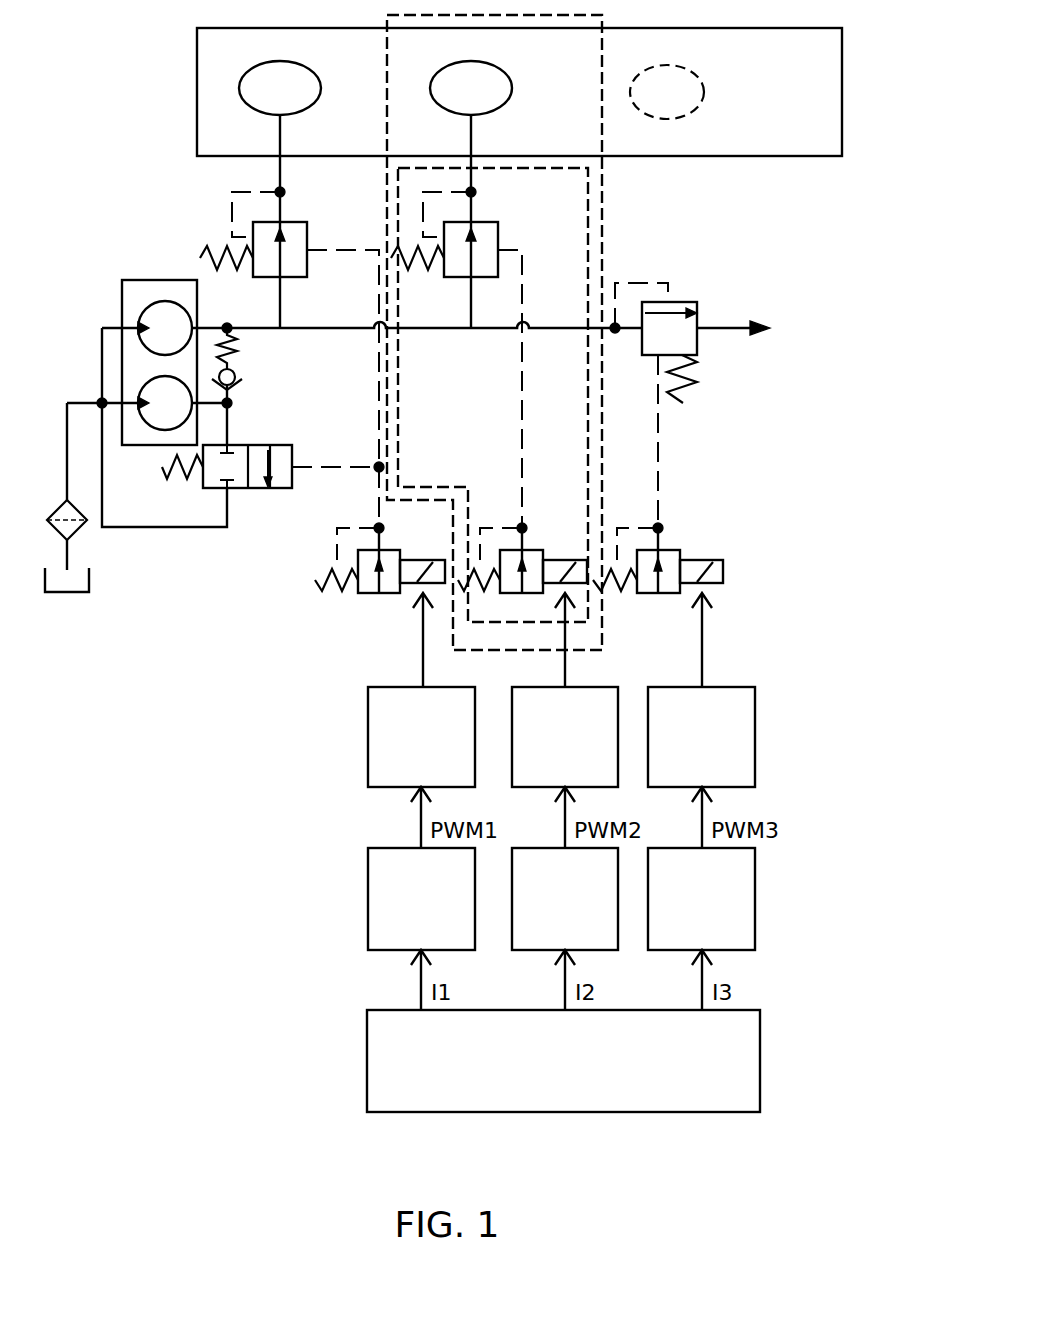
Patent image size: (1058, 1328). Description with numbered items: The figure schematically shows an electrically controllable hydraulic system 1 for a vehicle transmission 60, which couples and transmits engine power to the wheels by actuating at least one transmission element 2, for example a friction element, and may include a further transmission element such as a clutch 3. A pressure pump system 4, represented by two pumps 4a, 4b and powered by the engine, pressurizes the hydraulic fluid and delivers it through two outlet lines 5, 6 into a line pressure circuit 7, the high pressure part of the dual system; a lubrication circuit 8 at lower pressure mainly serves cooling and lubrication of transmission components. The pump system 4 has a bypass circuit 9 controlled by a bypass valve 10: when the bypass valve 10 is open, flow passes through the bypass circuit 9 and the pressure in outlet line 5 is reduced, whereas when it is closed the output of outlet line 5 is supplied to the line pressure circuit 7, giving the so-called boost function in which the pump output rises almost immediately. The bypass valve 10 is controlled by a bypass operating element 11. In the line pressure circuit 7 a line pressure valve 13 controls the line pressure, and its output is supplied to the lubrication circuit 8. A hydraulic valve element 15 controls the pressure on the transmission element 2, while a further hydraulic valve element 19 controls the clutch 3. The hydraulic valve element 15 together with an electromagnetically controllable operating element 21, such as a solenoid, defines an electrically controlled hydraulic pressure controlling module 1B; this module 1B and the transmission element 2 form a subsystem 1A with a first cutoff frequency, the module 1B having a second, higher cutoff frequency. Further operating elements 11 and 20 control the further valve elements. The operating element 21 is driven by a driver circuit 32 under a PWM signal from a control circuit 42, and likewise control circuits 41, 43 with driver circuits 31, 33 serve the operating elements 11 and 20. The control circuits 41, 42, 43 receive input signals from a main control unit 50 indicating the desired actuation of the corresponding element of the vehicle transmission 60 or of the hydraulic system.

The electrically controllable hydraulic system 1 is at (198, 978).
The subsystem 1A is at (601, 210).
The electrically controlled hydraulic pressure controlling module 1B is at (588, 255).
The transmission element 2 is at (463, 102).
The clutch 3 is at (272, 102).
The pressure pump system 4 is at (111, 362).
The pump 4a is at (181, 416).
The pump 4b is at (181, 341).
The outlet line 5 is at (207, 404).
The outlet line 6 is at (212, 327).
The line pressure circuit 7 is at (338, 330).
The lubrication circuit 8 is at (730, 328).
The bypass circuit 9 is at (186, 527).
The bypass valve 10 is at (258, 490).
The bypass operating element 11 is at (371, 593).
The line pressure valve 13 is at (697, 345).
The hydraulic valve element 15 is at (462, 280).
The hydraulic valve element 19 is at (298, 280).
The electromagnetically controllable operating element 20 is at (672, 550).
The electromagnetically controllable operating element 21 is at (535, 550).
The driver circuit 31 is at (437, 753).
The driver circuit 32 is at (581, 753).
The driver circuit 33 is at (718, 753).
The control circuit 41 is at (437, 915).
The control circuit 42 is at (581, 915).
The control circuit 43 is at (718, 915).
The main control unit 50 is at (579, 1075).
The vehicle transmission 60 is at (766, 76).